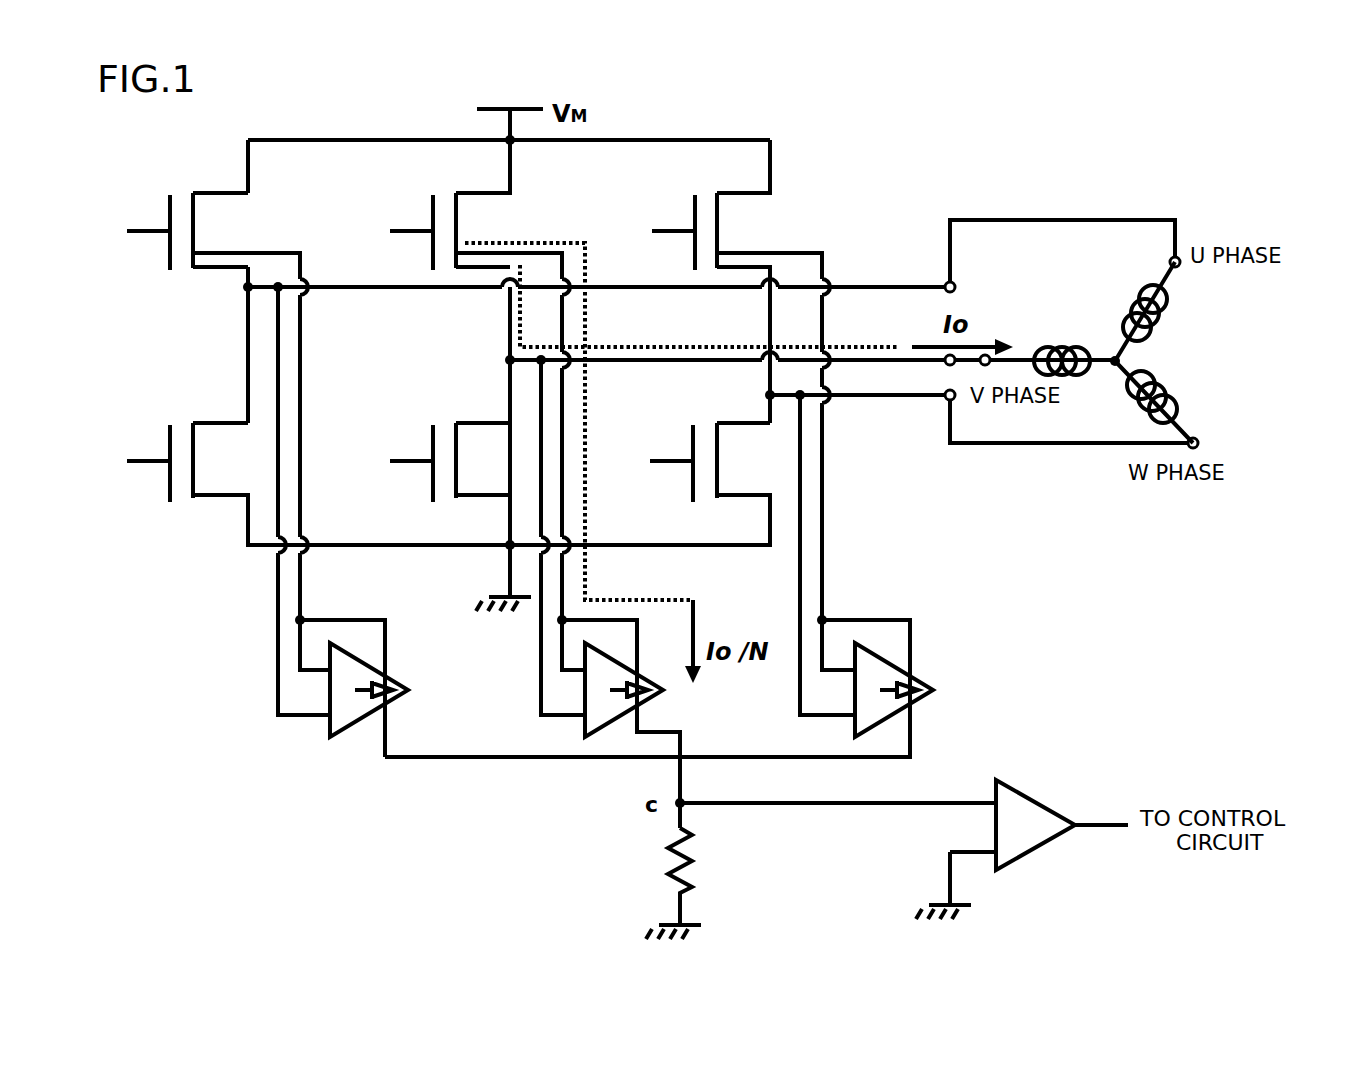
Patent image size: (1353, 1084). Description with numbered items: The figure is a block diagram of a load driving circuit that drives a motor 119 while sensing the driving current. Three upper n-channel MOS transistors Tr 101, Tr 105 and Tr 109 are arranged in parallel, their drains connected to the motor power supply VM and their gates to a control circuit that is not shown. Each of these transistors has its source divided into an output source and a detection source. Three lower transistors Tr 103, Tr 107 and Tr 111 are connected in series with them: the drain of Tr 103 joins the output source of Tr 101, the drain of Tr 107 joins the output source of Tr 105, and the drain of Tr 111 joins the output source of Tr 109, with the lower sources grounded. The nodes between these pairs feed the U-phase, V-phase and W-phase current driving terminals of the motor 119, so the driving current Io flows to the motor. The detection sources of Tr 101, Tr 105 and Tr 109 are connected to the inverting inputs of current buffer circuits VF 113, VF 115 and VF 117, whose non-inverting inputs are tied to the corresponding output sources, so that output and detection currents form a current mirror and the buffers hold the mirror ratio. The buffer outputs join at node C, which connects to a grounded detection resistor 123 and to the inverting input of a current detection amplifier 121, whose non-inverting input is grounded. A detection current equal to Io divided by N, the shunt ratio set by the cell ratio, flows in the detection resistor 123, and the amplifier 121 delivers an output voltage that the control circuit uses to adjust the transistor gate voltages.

The transistor Tr 101 is at (171, 210).
The transistor Tr 103 is at (169, 441).
The transistor Tr 105 is at (439, 212).
The transistor Tr 107 is at (438, 443).
The transistor Tr 109 is at (701, 212).
The transistor Tr 111 is at (699, 444).
The current buffer circuit 113 is at (395, 690).
The current buffer circuit 115 is at (653, 690).
The current buffer circuit 117 is at (922, 690).
The motor 119 is at (1100, 311).
The current detection amplifier 121 is at (1063, 816).
The detection resistor 123 is at (734, 895).